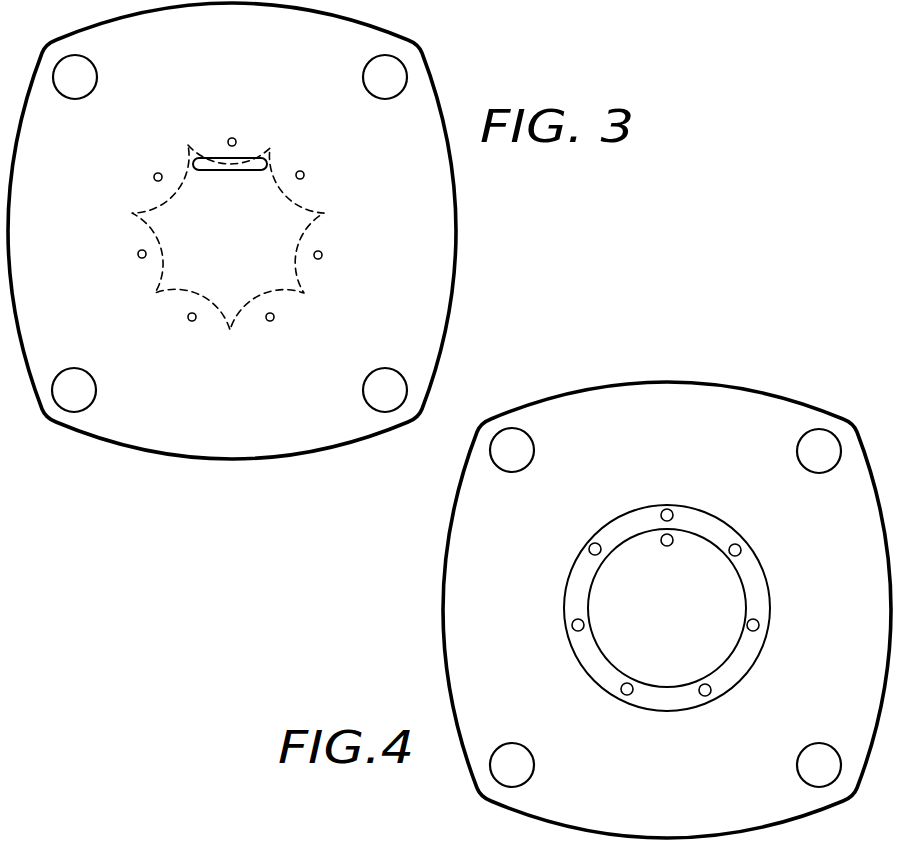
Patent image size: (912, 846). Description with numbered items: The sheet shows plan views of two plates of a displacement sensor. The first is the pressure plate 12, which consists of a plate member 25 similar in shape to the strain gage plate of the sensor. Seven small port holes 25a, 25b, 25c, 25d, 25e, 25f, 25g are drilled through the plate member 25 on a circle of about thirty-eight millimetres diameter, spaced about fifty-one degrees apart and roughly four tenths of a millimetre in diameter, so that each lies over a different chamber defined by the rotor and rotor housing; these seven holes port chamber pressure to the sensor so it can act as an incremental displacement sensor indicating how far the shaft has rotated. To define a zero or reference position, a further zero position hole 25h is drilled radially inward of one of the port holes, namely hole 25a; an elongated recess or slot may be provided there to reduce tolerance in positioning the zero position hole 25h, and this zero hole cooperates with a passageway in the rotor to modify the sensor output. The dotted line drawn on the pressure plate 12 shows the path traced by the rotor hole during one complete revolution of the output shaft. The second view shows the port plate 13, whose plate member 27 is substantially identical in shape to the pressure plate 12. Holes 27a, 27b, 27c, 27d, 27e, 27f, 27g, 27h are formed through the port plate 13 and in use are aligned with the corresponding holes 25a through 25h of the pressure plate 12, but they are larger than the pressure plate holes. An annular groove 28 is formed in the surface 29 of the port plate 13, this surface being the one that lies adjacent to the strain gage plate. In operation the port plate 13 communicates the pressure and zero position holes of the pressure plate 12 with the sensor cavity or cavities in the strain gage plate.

In FIG. 3, the pressure plate 12 is at (462, 233).
In FIG. 3, the plate member 25 is at (428, 322).
In FIG. 3, the port hole 25a is at (232, 138).
In FIG. 3, the port hole 25b is at (303, 172).
In FIG. 3, the port hole 25c is at (322, 256).
In FIG. 3, the port hole 25d is at (272, 321).
In FIG. 3, the port hole 25e is at (192, 321).
In FIG. 3, the port hole 25f is at (138, 257).
In FIG. 3, the port hole 25g is at (158, 173).
In FIG. 3, the zero position hole 25h is at (240, 154).
In FIG. 4, the port plate 13 is at (637, 600).
In FIG. 4, the plate member 27 is at (607, 614).
In FIG. 4, the port plate hole 27a is at (670, 510).
In FIG. 4, the port plate hole 27b is at (741, 551).
In FIG. 4, the port plate hole 27c is at (758, 630).
In FIG. 4, the port plate hole 27d is at (711, 694).
In FIG. 4, the port plate hole 27e is at (622, 693).
In FIG. 4, the port plate hole 27f is at (574, 630).
In FIG. 4, the port plate hole 27g is at (590, 545).
In FIG. 4, the port plate hole 27h is at (661, 547).
In FIG. 4, the annular groove 28 is at (718, 534).
In FIG. 4, the surface 29 is at (755, 388).